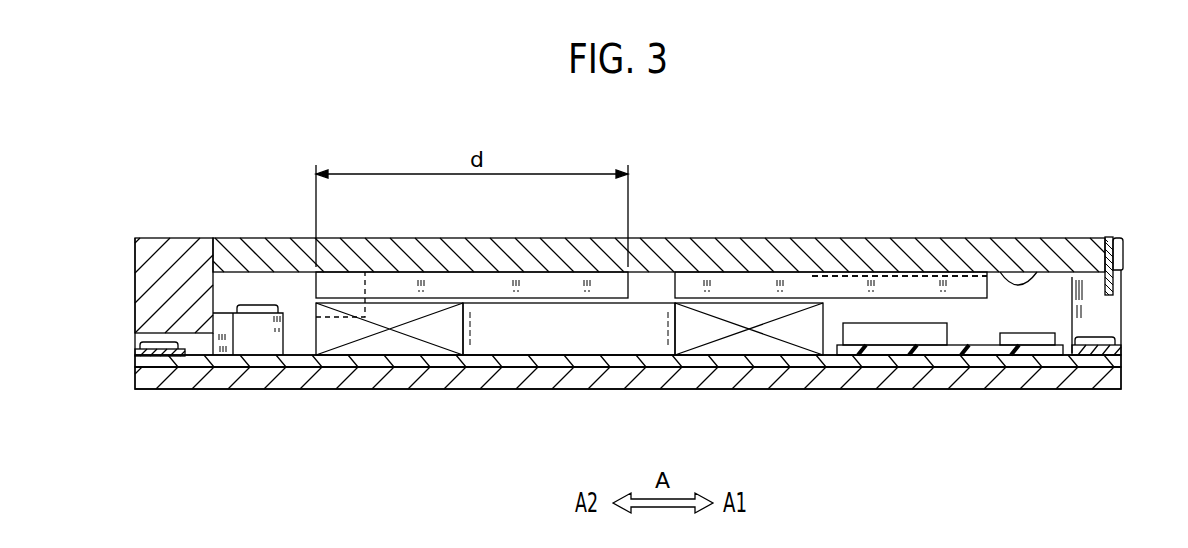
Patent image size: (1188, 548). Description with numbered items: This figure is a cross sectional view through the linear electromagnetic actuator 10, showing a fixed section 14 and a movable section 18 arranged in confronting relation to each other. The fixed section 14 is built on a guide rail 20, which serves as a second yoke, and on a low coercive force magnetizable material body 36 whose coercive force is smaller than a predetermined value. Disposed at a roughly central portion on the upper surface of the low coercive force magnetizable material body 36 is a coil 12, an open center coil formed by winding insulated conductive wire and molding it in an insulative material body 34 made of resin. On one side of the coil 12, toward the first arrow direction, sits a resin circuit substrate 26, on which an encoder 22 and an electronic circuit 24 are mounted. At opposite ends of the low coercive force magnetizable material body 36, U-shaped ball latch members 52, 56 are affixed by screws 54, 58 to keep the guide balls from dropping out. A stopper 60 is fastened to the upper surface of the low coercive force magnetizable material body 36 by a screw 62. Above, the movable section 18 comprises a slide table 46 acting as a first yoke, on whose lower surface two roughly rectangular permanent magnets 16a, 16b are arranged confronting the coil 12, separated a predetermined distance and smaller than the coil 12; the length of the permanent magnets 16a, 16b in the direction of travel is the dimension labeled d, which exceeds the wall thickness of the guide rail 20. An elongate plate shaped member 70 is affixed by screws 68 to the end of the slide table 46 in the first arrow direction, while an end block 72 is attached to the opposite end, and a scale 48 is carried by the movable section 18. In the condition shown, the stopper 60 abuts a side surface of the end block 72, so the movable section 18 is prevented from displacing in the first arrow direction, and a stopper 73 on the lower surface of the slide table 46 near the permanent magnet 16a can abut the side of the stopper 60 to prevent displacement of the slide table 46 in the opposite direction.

The linear electromagnetic actuator 10 is at (882, 170).
The coil 12 is at (742, 346).
The fixed section 14 is at (371, 389).
The permanent magnet 16a is at (447, 288).
The permanent magnet 16b is at (714, 290).
The movable section 18 is at (863, 230).
The guide rail 20 is at (432, 374).
The encoder 22 is at (872, 337).
The electronic circuit 24 is at (1047, 337).
The circuit substrate 26 is at (848, 348).
The insulative material body 34 is at (535, 343).
The low coercive force magnetizable material body 36 is at (967, 362).
The slide table 46 is at (771, 282).
The scale 48 is at (1002, 277).
The ball latch member 52 is at (1122, 367).
The screw 54 is at (1105, 345).
The ball latch member 56 is at (147, 354).
The screw 58 is at (158, 345).
The stopper 60 is at (262, 340).
The screw 62 is at (253, 308).
The screws 68 is at (1118, 253).
The plate shaped member 70 is at (1112, 283).
The end block 72 is at (177, 273).
The stopper 73 is at (340, 303).